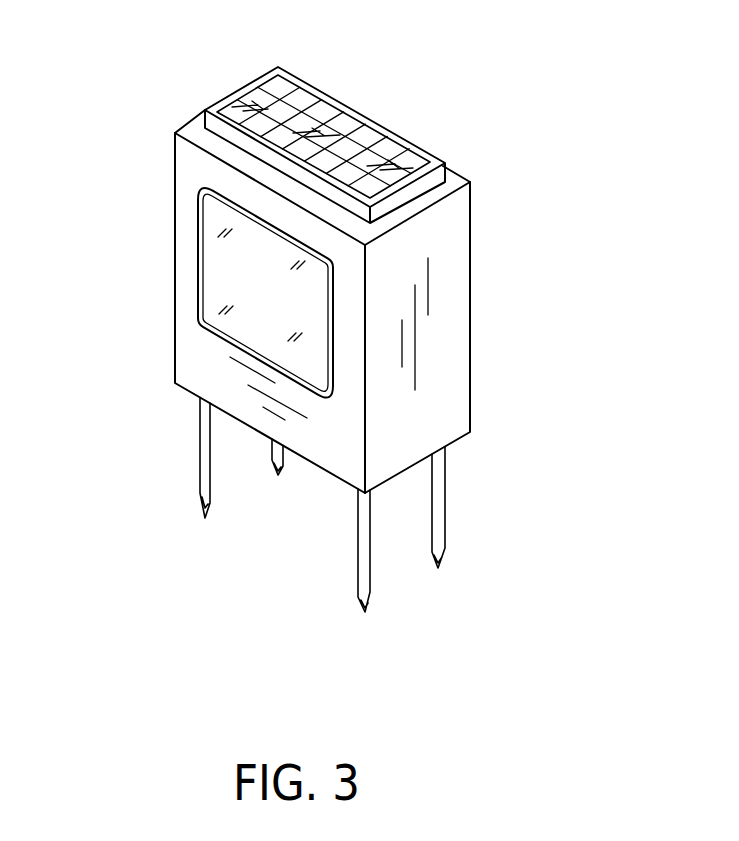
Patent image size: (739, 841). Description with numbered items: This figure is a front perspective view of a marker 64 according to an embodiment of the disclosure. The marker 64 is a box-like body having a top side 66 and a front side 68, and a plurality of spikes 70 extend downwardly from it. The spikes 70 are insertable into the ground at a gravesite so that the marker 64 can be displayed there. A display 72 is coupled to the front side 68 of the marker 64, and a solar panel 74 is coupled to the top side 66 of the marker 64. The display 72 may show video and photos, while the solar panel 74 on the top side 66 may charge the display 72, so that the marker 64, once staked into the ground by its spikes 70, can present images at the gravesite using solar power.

The marker 64 is at (175, 132).
The top side 66 is at (452, 185).
The front side 68 is at (188, 333).
The spikes 70 is at (276, 470).
The display 72 is at (202, 220).
The solar panel 74 is at (295, 102).